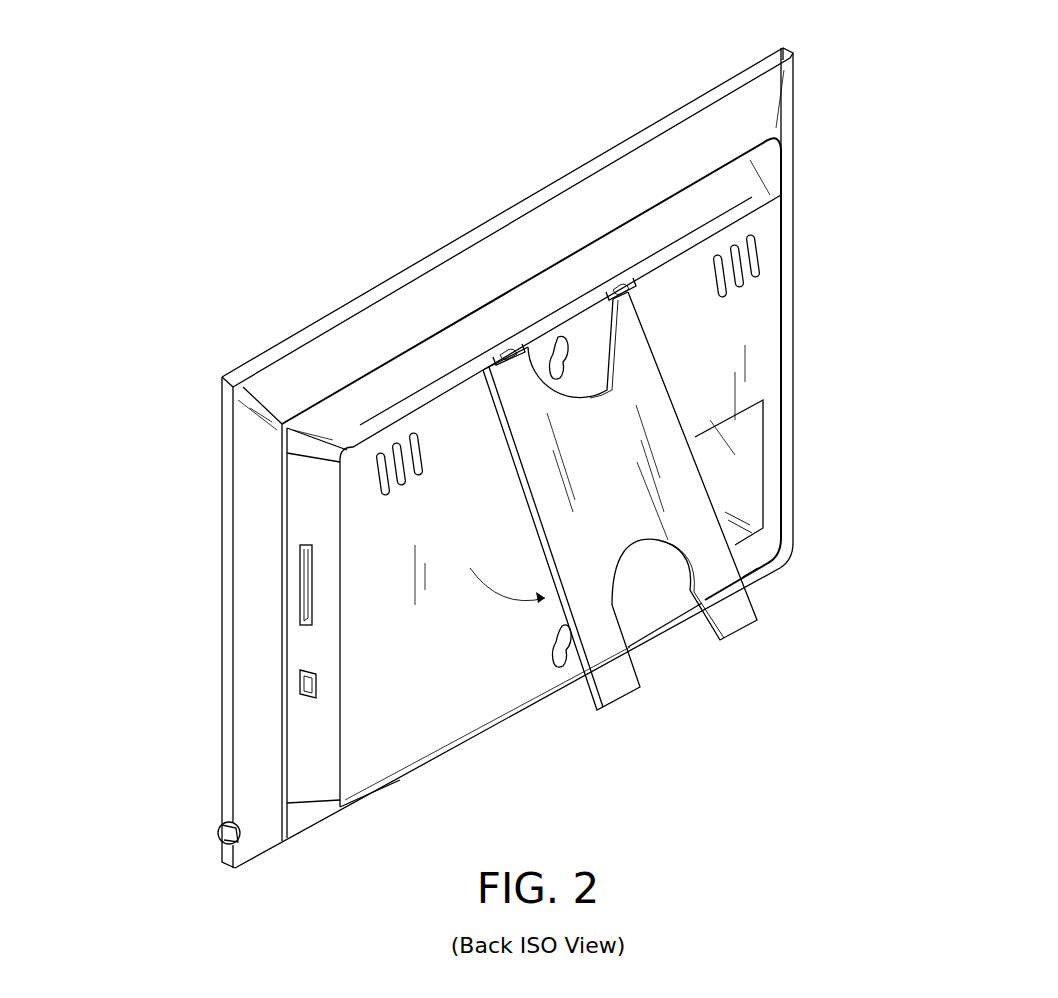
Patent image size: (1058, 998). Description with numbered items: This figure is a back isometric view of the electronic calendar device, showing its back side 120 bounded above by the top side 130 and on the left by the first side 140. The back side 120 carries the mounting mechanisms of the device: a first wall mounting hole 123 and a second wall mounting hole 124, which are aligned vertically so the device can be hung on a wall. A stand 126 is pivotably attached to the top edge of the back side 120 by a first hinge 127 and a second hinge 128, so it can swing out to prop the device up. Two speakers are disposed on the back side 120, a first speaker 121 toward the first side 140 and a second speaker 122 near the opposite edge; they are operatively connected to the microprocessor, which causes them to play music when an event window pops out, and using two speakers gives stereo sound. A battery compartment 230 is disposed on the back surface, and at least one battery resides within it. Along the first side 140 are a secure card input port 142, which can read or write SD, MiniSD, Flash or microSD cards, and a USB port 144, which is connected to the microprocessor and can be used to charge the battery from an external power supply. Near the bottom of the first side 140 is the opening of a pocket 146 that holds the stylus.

The back side 120 is at (765, 383).
The first speaker 121 is at (392, 452).
The second speaker 122 is at (742, 240).
The first wall mounting hole 123 is at (577, 355).
The second wall mounting hole 124 is at (560, 680).
The stand 126 is at (740, 597).
The first hinge 127 is at (500, 353).
The second hinge 128 is at (623, 282).
The top side 130 is at (535, 300).
The first side 140 is at (272, 512).
The secure card input port 142 is at (300, 575).
The USB port 144 is at (300, 688).
The pocket 146 is at (215, 835).
The battery compartment 230 is at (740, 466).